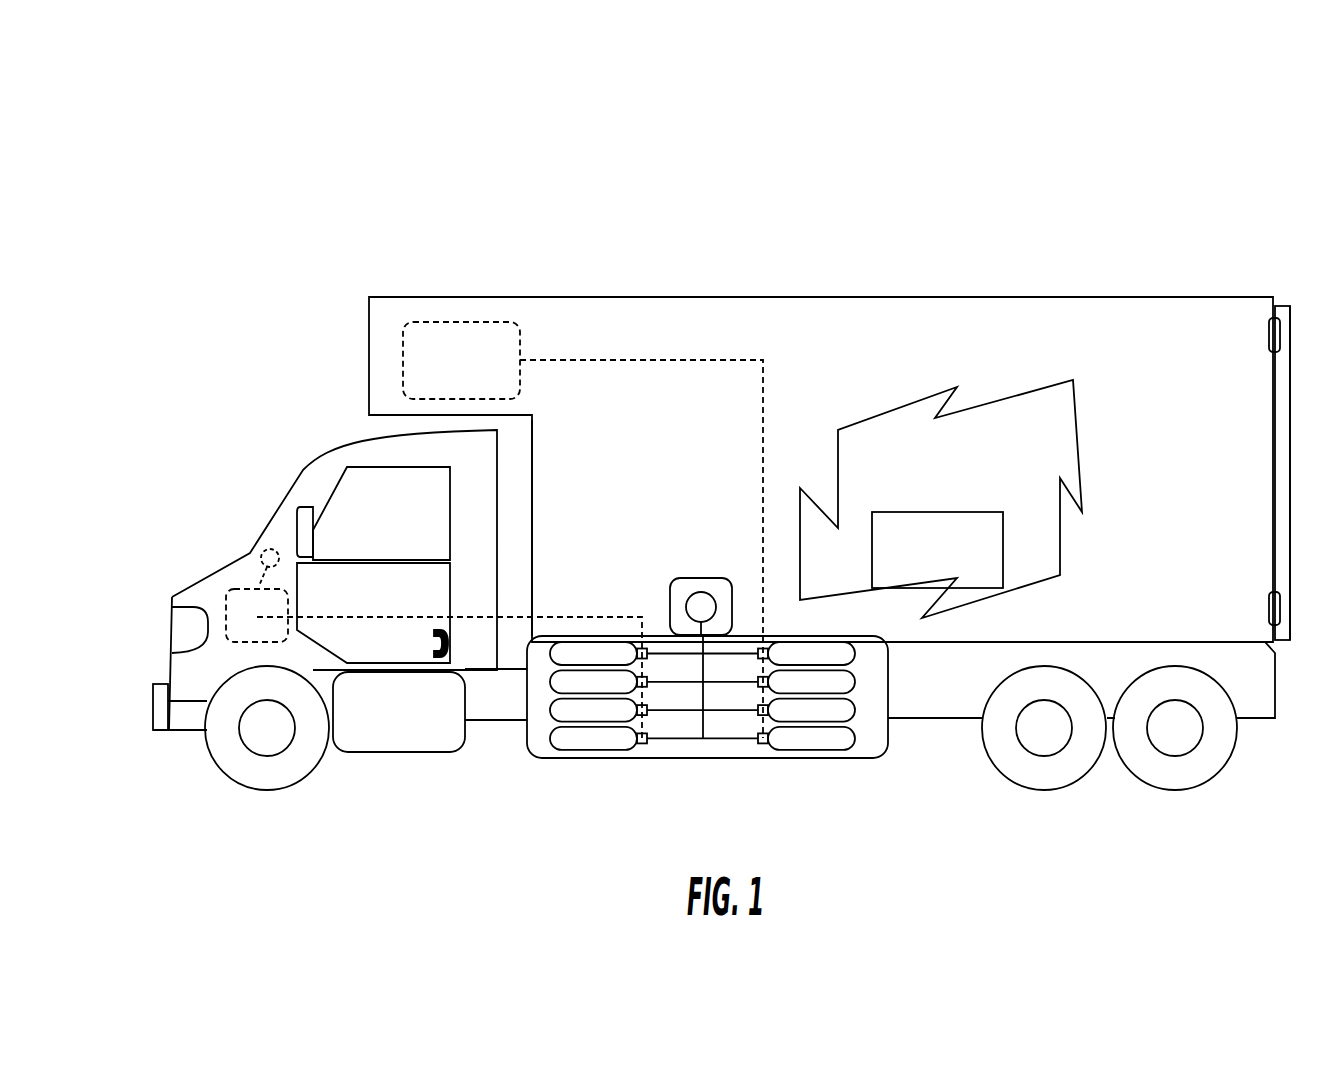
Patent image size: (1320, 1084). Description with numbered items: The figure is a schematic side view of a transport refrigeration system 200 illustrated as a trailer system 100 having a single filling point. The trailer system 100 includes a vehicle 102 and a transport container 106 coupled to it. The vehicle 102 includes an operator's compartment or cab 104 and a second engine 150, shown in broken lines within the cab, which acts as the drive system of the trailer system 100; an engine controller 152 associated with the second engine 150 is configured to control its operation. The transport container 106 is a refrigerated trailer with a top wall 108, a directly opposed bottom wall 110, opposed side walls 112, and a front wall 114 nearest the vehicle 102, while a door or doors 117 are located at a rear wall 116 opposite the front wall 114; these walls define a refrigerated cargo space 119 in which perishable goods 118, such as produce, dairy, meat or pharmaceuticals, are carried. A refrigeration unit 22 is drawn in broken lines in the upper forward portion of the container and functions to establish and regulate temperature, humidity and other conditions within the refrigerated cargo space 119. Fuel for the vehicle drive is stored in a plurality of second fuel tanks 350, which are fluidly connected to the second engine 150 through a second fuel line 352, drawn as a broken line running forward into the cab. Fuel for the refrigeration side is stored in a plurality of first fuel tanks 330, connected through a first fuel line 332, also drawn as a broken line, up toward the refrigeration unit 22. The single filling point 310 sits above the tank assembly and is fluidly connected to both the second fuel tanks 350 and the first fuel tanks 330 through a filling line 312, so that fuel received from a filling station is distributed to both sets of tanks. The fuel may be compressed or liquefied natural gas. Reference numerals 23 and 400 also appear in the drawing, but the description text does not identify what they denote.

The trailer system 100 is at (383, 168).
The vehicle 102 is at (183, 733).
The cab 104 is at (348, 523).
The transport container 106 is at (961, 314).
The top wall 108 is at (763, 297).
The bottom wall 110 is at (1062, 642).
The side walls 112 is at (837, 367).
The front wall 114 is at (535, 493).
The rear wall 116 is at (1273, 402).
The door 117 is at (1288, 480).
The perishable goods 118 is at (955, 571).
The refrigerated cargo space 119 is at (1040, 450).
The second engine 150 is at (235, 587).
The engine controller 152 is at (268, 553).
The transport refrigeration system 200 is at (530, 498).
The refrigeration unit 22 is at (433, 319).
The gap 23 is at (513, 427).
The single filling point 310 is at (701, 600).
The filling line 312 is at (705, 723).
The first fuel tanks 330 is at (783, 745).
The first fuel line 332 is at (672, 360).
The second fuel tanks 350 is at (623, 745).
The second fuel line 352 is at (343, 616).
The valves 400 is at (647, 738).